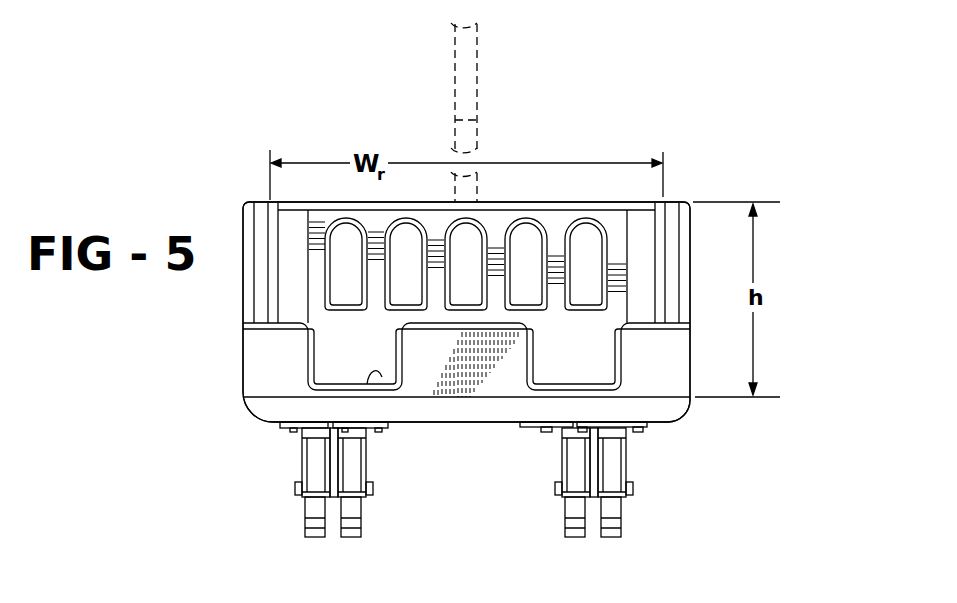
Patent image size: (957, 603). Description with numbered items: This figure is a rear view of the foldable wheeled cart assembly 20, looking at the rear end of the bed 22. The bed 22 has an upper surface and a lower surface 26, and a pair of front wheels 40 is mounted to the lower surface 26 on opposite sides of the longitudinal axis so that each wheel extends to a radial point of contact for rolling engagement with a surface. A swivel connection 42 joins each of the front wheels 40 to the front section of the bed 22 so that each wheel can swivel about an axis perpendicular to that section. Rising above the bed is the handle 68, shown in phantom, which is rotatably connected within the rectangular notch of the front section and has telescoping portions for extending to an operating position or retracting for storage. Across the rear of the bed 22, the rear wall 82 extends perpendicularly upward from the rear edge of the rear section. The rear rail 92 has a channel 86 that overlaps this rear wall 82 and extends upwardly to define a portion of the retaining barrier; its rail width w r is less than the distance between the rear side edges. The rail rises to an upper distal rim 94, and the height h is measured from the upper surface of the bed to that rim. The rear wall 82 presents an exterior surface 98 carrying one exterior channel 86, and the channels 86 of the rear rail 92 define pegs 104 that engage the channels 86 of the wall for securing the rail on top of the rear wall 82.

The assembly 20 is at (320, 113).
The bed 22 is at (684, 417).
The lower surface 26 is at (460, 423).
The front wheels 40 is at (310, 522).
The swivel connection 42 is at (363, 436).
The handle 68 is at (477, 72).
The rear wall 82 is at (253, 349).
The channel 86 is at (420, 330).
The rear rail 92 is at (609, 222).
The upper distal rim 94 is at (258, 201).
The exterior surface 98 is at (691, 211).
The peg 104 is at (338, 353).